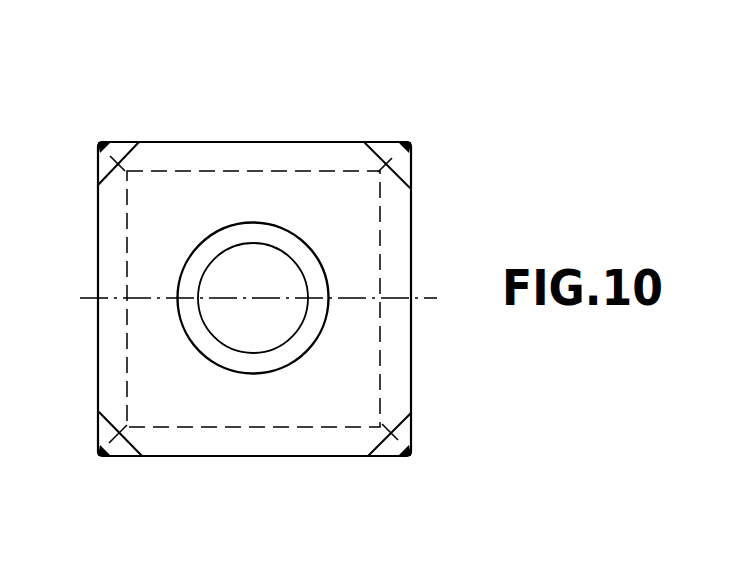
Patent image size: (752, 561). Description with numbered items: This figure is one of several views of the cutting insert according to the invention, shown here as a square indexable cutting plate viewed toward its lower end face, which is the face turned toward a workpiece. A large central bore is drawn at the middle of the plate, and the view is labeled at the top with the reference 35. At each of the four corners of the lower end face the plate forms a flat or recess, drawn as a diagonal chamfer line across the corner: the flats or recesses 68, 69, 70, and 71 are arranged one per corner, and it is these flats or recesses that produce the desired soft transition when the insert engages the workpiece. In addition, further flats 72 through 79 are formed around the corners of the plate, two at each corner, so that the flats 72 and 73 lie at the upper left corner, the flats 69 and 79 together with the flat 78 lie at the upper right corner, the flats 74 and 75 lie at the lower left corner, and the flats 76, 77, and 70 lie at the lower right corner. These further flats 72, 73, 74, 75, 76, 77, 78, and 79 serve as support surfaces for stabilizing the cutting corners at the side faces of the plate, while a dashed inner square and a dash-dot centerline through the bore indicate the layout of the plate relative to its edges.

The insert body 35 is at (242, 118).
The flat or recess 68 is at (123, 145).
The flat or recess 69 is at (380, 147).
The flat or recess 70 is at (410, 437).
The flat or recess 71 is at (123, 450).
The flat 72 is at (98, 141).
The flat 73 is at (98, 167).
The flat 74 is at (98, 433).
The flat 75 is at (102, 457).
The flat 76 is at (395, 462).
The flat 77 is at (413, 421).
The flat 78 is at (414, 150).
The flat 79 is at (402, 147).